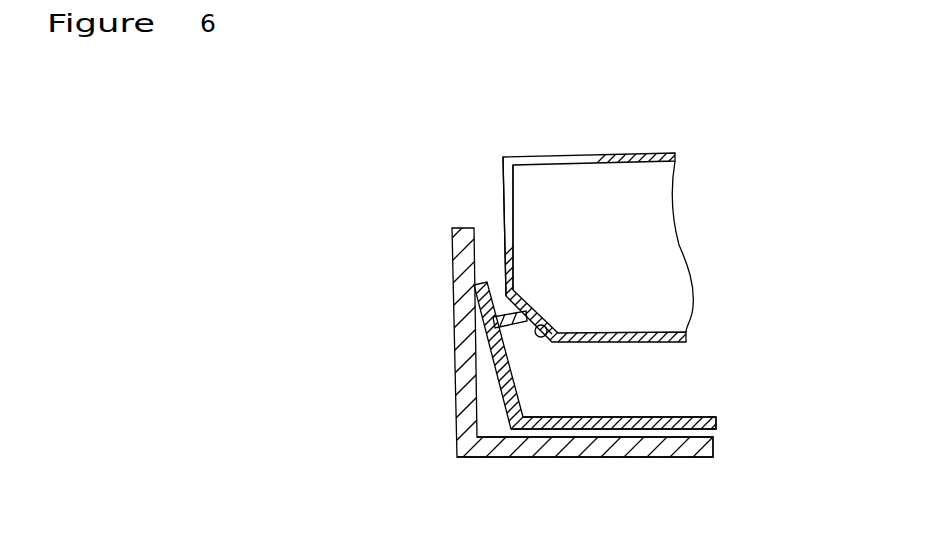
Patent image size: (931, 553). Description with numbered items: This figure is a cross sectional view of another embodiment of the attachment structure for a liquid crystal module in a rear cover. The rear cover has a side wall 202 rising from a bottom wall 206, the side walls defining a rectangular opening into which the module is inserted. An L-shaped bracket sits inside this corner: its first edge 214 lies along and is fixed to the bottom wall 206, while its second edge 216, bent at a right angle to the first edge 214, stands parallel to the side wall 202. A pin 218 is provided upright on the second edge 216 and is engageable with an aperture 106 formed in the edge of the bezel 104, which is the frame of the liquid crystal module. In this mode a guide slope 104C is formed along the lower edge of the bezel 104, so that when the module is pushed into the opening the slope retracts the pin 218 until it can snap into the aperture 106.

The bezel 104 is at (597, 155).
The aperture 106 is at (515, 260).
The guide slope 104C is at (548, 326).
The pin 218 is at (520, 333).
The side wall 202 is at (452, 262).
The bottom wall 206 is at (605, 457).
The second edge 216 is at (497, 377).
The first edge 214 is at (693, 417).